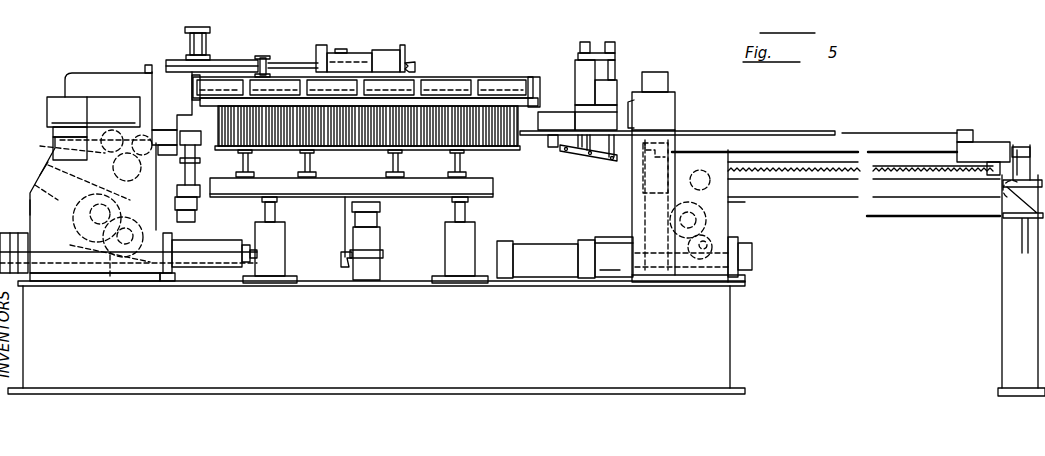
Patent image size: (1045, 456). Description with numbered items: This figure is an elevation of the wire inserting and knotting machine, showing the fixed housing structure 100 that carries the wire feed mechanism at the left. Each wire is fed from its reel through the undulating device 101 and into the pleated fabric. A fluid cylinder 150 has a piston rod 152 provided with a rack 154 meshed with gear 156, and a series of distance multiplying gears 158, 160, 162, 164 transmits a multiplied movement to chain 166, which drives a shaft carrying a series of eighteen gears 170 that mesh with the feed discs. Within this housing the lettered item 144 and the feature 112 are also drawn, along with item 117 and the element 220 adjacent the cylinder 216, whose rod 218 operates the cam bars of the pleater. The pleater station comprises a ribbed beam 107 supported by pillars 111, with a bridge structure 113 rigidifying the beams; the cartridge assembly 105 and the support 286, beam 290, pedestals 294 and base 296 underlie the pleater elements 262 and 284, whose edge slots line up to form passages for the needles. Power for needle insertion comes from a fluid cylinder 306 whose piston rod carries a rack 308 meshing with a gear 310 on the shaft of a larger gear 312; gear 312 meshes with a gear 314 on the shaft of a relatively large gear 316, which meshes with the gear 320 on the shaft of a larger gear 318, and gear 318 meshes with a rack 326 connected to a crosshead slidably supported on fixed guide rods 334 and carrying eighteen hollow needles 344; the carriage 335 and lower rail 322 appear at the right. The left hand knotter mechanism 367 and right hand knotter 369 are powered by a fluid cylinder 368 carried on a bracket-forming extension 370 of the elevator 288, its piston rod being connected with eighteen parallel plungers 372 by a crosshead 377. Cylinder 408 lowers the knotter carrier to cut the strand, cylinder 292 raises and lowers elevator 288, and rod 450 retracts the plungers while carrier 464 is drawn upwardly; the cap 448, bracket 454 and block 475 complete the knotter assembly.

The fixed housing structure 100 is at (92, 72).
The undulating device 101 is at (160, 131).
The cartridge assembly 105 is at (455, 69).
The ribbed beam 107 is at (57, 97).
The pillars 111 is at (73, 139).
The knob 112 is at (148, 68).
The bridge structure 113 is at (402, 46).
The bracket 117 is at (266, 57).
The dashed line member 144 is at (52, 147).
The fluid cylinder 150 is at (81, 201).
The piston rod 152 is at (50, 283).
The rack 154 is at (163, 290).
The gear 156 is at (163, 228).
The distance multiplying gear 158 is at (110, 283).
The distance multiplying gear 160 is at (73, 230).
The distance multiplying gear 162 is at (55, 258).
The distance multiplying gear 164 is at (30, 200).
The chain 166 is at (45, 180).
The gears 170 is at (50, 166).
The cylinder 216 is at (225, 65).
The rod 218 is at (284, 62).
The stop 220 is at (407, 66).
The pleater element 262 is at (350, 123).
The pleater element 284 is at (425, 133).
The support 286 is at (262, 150).
The elevator 288 is at (307, 190).
The beam 290 is at (386, 162).
The cylinder 292 is at (383, 238).
The pedestal 294 is at (284, 240).
The base frame 296 is at (312, 372).
The fluid cylinder 306 is at (552, 265).
The rack 308 is at (661, 286).
The gear 310 is at (728, 222).
The gear 312 is at (732, 233).
The gear 314 is at (737, 208).
The gear 316 is at (637, 193).
The gear 318 is at (637, 170).
The gear 320 is at (738, 190).
The lower rail 322 is at (828, 203).
The rack 326 is at (910, 170).
The fixed guide rods 334 is at (777, 150).
The carriage 335 is at (890, 133).
The hollow needles 344 is at (718, 131).
The left hand knotter mechanism 367 is at (183, 90).
The fluid cylinder 368 is at (198, 210).
The right hand knotter 369 is at (573, 67).
The bracket-forming extension 370 is at (202, 162).
The plungers 372 is at (184, 156).
The crosshead 377 is at (182, 166).
The cylinder 408 is at (197, 26).
The cap 448 is at (597, 45).
The rod 450 is at (618, 62).
The bracket 454 is at (582, 157).
The carrier 464 is at (555, 112).
The block 475 is at (540, 118).